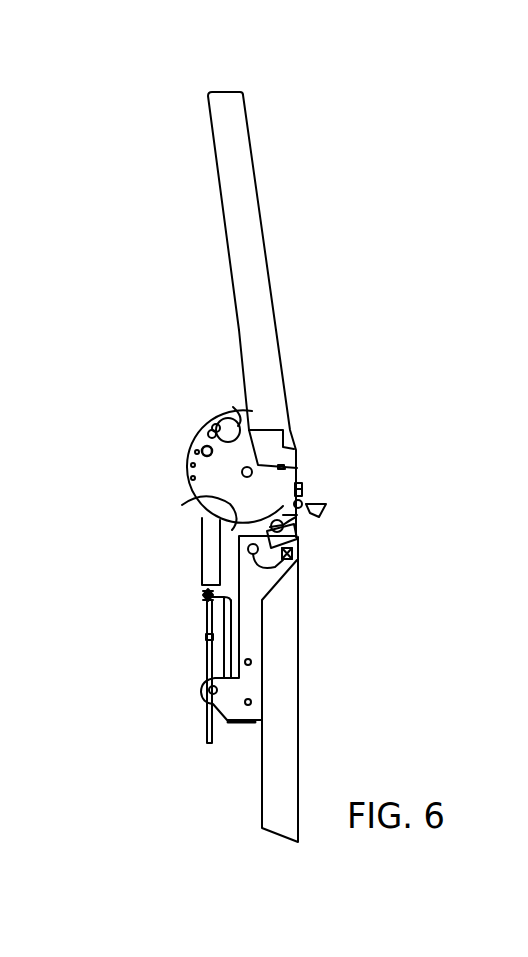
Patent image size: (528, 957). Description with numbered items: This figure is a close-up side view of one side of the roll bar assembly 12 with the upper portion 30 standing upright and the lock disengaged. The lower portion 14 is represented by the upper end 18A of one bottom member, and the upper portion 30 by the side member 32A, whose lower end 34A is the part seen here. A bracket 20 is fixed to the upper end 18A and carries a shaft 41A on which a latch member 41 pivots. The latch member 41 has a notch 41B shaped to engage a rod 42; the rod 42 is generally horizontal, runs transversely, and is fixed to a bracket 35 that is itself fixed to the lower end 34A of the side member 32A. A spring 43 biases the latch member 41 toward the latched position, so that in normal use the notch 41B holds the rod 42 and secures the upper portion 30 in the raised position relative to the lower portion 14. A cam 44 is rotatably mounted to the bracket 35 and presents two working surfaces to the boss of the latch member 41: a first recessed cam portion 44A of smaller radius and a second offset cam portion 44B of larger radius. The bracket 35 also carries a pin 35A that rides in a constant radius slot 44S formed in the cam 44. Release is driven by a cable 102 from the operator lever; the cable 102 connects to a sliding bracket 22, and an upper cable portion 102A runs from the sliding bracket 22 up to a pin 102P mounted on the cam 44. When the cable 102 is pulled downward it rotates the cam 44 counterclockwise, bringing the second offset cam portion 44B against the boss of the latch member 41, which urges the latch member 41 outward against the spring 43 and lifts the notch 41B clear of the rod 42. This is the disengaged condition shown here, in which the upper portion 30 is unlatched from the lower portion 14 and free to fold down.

The roll bar assembly 12 is at (412, 284).
The lower portion 14 is at (339, 693).
The upper end 18A is at (285, 597).
The bracket 20 is at (250, 678).
The sliding bracket 22 is at (200, 597).
The upper portion 30 is at (288, 104).
The side member 32A is at (248, 207).
The lower end 34A is at (286, 358).
The bracket 35 is at (288, 443).
The pin 35A is at (219, 424).
The latch member 41 is at (303, 505).
The shaft 41A is at (292, 558).
The notch 41B is at (326, 509).
The rod 42 is at (302, 483).
The spring 43 is at (297, 540).
The cam 44 is at (217, 469).
The first recessed cam portion 44A is at (296, 460).
The second offset cam portion 44B is at (182, 505).
The constant radius slot 44S is at (233, 407).
The cable 102 is at (205, 733).
The upper cable portion 102A is at (202, 564).
The pin 102P is at (203, 449).